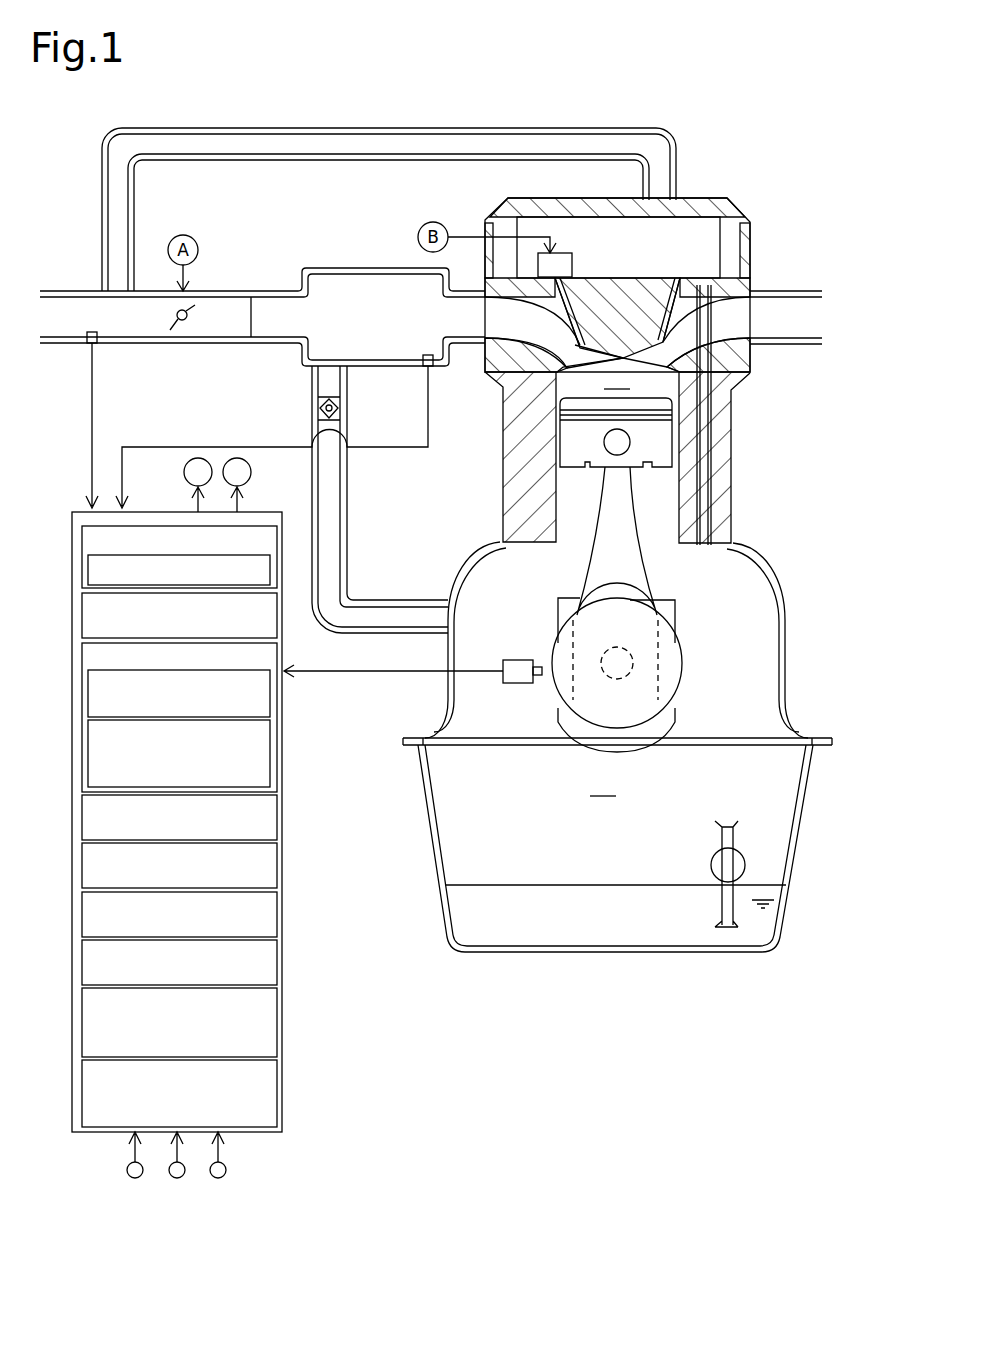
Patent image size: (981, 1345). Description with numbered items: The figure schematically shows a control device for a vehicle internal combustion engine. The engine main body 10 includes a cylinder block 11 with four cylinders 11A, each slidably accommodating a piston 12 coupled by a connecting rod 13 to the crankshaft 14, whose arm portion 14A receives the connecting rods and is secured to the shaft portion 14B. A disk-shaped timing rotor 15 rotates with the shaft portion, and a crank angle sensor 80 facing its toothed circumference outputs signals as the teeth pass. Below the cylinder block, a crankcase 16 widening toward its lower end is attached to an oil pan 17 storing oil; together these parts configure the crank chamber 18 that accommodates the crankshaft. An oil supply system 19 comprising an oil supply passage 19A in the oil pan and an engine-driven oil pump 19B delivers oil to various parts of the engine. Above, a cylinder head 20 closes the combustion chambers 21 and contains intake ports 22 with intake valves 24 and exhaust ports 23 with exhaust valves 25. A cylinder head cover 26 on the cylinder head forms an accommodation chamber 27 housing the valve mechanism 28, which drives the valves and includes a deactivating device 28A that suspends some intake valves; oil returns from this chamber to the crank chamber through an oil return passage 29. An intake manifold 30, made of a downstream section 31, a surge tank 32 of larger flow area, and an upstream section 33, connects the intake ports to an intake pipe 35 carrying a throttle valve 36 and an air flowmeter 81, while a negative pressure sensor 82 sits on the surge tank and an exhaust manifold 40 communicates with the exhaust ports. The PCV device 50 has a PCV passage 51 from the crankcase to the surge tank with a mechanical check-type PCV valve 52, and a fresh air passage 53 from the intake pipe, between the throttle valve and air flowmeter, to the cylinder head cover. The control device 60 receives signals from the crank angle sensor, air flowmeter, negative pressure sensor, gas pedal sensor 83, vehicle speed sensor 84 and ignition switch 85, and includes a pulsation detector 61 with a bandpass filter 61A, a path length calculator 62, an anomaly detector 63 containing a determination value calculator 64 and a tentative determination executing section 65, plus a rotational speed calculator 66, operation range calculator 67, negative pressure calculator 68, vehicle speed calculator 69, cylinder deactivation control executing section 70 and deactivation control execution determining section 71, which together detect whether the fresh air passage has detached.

The engine main body 10 is at (738, 135).
The cylinder block 11 is at (733, 472).
The cylinder 11A is at (670, 538).
The piston 12 is at (577, 462).
The connecting rod 13 is at (607, 534).
The crankshaft 14 is at (666, 675).
The arm portion 14A is at (630, 600).
The shaft portion 14B is at (617, 663).
The timing rotor 15 is at (676, 690).
The crankcase 16 is at (784, 576).
The oil pan 17 is at (798, 856).
The crank chamber 18 is at (603, 784).
The oil supply system 19 is at (674, 874).
The oil supply passage 19A is at (722, 833).
The oil pump 19B is at (640, 833).
The cylinder head 20 is at (752, 360).
The combustion chamber 21 is at (618, 374).
The intake port 22 is at (512, 334).
The exhaust port 23 is at (731, 337).
The intake valve 24 is at (562, 347).
The exhaust valve 25 is at (662, 348).
The cylinder head cover 26 is at (736, 200).
The accommodation chamber 27 is at (734, 245).
The valve mechanism 28 is at (600, 217).
The deactivating device 28A is at (573, 265).
The oil return passage 29 is at (702, 285).
The intake manifold 30 is at (274, 228).
The downstream section 31 is at (464, 291).
The surge tank 32 is at (382, 268).
The upstream section 33 is at (281, 291).
The intake pipe 35 is at (219, 291).
The throttle valve 36 is at (197, 317).
The exhaust manifold 40 is at (786, 291).
The PCV device 50 is at (205, 112).
The PCV passage 51 is at (349, 518).
The PCV valve 52 is at (349, 408).
The fresh air passage 53 is at (243, 128).
The control device 60 is at (266, 512).
The pulsation detector 61 is at (82, 540).
The bandpass filter 61A is at (88, 572).
The path length calculator 62 is at (82, 612).
The anomaly detector 63 is at (82, 655).
The determination value calculator 64 is at (88, 692).
The tentative determination executing section 65 is at (88, 752).
The rotational speed calculator 66 is at (277, 815).
The operation range calculator 67 is at (277, 865).
The negative pressure calculator 68 is at (277, 905).
The vehicle speed calculator 69 is at (82, 960).
The cylinder deactivation control executing section 70 is at (82, 1000).
The deactivation control execution determining section 71 is at (82, 1070).
The crank angle sensor 80 is at (518, 660).
The air flowmeter 81 is at (100, 344).
The negative pressure sensor 82 is at (434, 374).
The gas pedal sensor 83 is at (140, 1177).
The vehicle speed sensor 84 is at (182, 1177).
The ignition switch 85 is at (223, 1177).